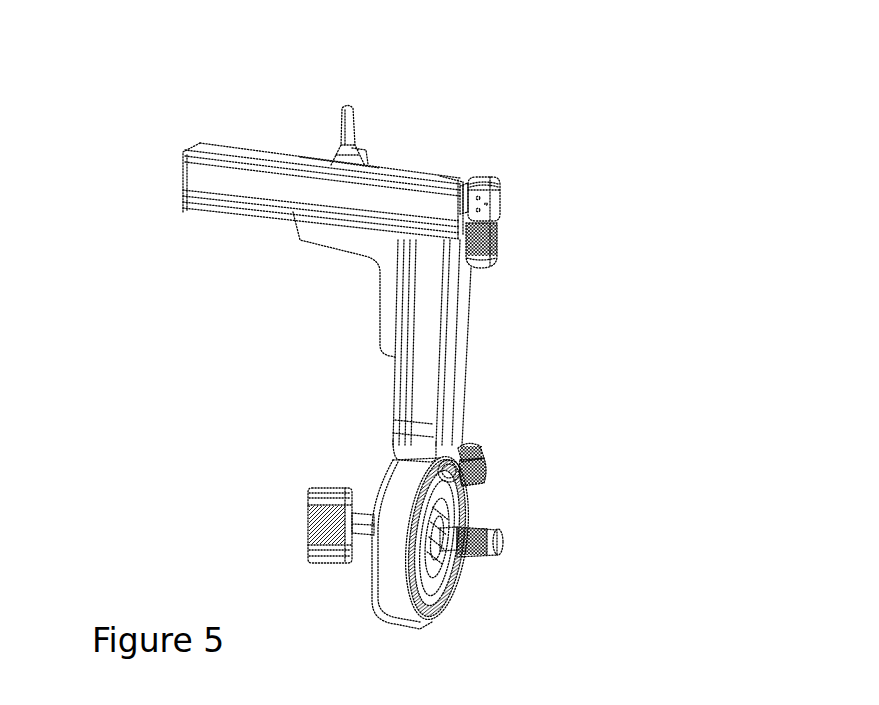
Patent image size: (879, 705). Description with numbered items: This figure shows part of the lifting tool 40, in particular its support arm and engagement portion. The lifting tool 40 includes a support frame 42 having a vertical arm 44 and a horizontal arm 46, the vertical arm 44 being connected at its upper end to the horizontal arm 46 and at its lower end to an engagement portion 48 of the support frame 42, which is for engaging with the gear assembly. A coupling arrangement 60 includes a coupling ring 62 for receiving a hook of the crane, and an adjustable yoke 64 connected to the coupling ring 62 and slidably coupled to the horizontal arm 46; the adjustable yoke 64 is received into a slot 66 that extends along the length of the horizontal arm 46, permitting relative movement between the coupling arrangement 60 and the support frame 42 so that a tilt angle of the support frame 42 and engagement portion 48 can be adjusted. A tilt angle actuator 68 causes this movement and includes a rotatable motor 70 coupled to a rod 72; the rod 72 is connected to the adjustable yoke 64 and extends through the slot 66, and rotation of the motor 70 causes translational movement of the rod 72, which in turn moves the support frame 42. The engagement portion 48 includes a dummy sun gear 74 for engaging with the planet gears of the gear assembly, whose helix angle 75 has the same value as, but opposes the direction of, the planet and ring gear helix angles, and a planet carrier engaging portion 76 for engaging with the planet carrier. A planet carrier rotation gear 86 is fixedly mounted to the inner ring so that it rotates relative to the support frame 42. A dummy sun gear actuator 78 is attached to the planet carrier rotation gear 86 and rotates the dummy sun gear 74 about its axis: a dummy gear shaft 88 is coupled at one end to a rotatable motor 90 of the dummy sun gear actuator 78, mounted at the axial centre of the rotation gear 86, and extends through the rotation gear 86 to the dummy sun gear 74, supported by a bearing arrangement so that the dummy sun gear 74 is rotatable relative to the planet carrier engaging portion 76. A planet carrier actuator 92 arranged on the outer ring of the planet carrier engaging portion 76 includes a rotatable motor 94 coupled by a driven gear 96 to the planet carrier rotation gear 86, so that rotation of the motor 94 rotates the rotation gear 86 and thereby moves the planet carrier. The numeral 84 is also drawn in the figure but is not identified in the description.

The lifting tool 40 is at (140, 119).
The support frame 42 is at (600, 132).
The vertical arm 44 is at (460, 315).
The horizontal arm 46 is at (247, 177).
The engagement portion 48 is at (552, 540).
The coupling arrangement 60 is at (375, 115).
The coupling ring 62 is at (345, 122).
The adjustable yoke 64 is at (333, 169).
The slot 66 is at (453, 182).
The tilt angle actuator 68 is at (498, 200).
The rotatable motor 70 is at (498, 243).
The rod 72 is at (430, 180).
The dummy sun gear 74 is at (320, 500).
The helix angle 75 is at (320, 528).
The planet carrier engaging portion 76 is at (460, 512).
The dummy sun gear actuator 78 is at (457, 560).
The base 84 is at (273, 699).
The planet carrier rotation gear 86 is at (432, 607).
The dummy gear shaft 88 is at (365, 530).
The rotatable motor 90 is at (495, 553).
The planet carrier actuator 92 is at (477, 452).
The rotatable motor 94 is at (473, 467).
The driven gear 96 is at (446, 455).